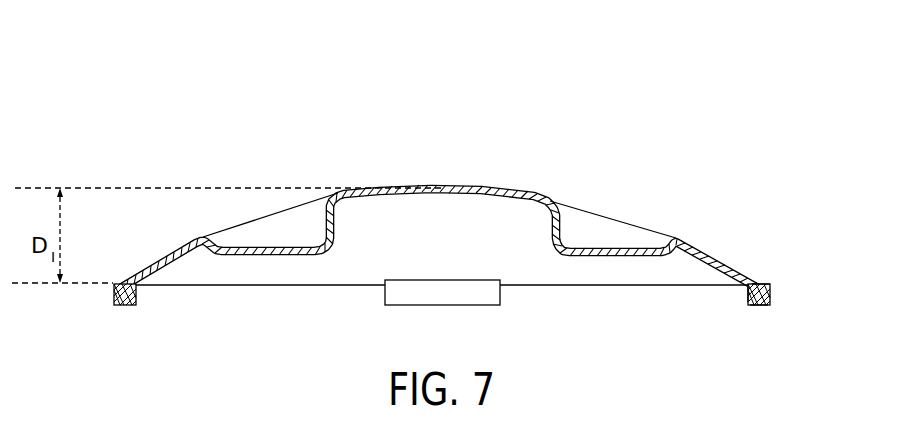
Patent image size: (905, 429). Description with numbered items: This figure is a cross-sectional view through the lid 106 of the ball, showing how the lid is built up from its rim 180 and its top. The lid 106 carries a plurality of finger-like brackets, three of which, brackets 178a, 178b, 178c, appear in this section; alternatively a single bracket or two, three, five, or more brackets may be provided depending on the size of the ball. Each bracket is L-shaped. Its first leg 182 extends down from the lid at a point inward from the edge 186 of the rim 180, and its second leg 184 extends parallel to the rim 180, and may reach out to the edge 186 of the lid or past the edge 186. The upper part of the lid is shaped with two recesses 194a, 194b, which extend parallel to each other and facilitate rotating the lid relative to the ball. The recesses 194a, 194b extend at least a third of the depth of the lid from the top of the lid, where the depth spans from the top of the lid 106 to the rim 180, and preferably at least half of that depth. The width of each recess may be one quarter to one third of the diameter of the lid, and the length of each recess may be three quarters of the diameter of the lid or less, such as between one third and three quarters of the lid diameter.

The lid 106 is at (573, 66).
The recess 194a is at (292, 227).
The recess 194b is at (610, 232).
The rim 180 is at (252, 286).
The finger-like bracket 178a is at (123, 308).
The finger-like bracket 178b is at (465, 305).
The finger-like bracket 178c is at (773, 311).
The first leg 182 is at (747, 295).
The second leg 184 is at (762, 306).
The edge 186 is at (770, 282).